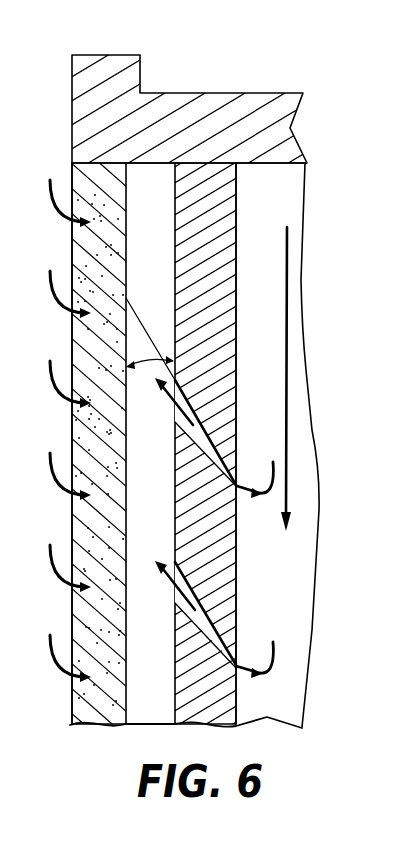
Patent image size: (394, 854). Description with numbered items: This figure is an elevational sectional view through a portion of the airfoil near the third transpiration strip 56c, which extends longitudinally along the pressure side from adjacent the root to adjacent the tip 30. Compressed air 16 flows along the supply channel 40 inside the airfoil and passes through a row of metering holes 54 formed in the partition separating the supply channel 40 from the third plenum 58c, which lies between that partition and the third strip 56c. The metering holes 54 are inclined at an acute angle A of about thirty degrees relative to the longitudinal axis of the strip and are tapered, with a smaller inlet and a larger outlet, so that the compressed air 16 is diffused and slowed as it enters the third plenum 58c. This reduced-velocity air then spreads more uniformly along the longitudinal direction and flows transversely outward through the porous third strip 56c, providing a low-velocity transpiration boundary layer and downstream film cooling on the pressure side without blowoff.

The tip 30 is at (102, 55).
The compressed air 16 is at (290, 385).
The supply channel 40 is at (284, 606).
The metering holes 54 is at (183, 612).
The third plenum 58c is at (163, 696).
The third transpiration strip 56c is at (71, 709).
The acute angle A is at (143, 370).